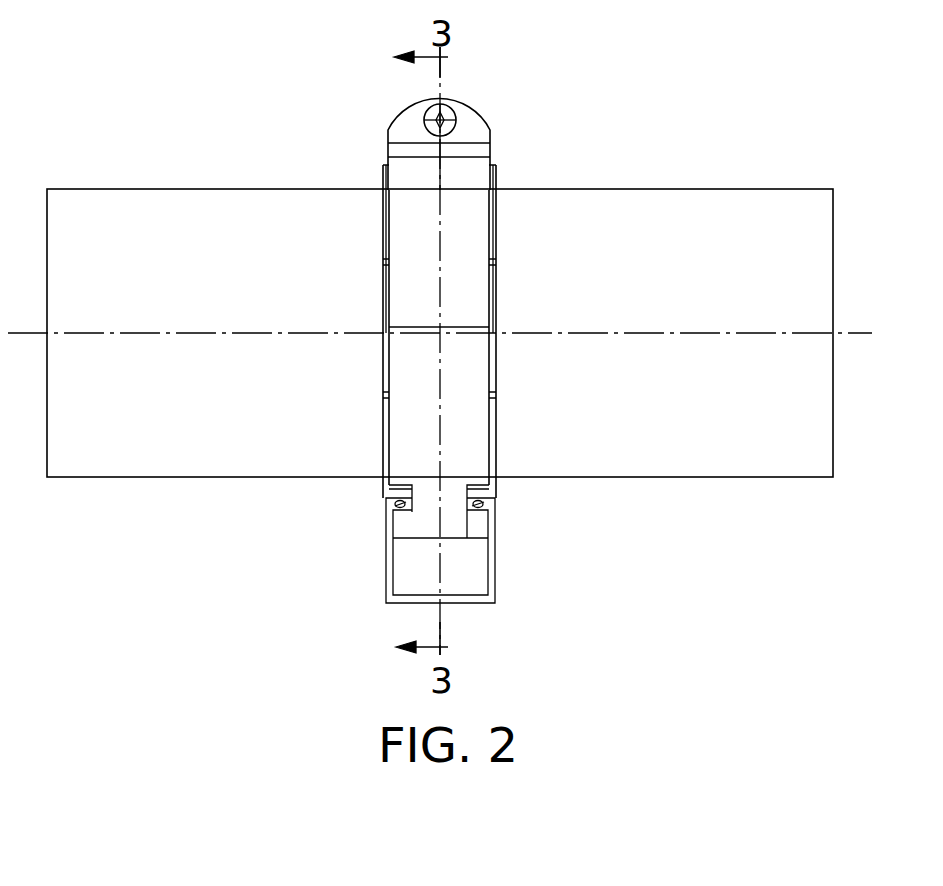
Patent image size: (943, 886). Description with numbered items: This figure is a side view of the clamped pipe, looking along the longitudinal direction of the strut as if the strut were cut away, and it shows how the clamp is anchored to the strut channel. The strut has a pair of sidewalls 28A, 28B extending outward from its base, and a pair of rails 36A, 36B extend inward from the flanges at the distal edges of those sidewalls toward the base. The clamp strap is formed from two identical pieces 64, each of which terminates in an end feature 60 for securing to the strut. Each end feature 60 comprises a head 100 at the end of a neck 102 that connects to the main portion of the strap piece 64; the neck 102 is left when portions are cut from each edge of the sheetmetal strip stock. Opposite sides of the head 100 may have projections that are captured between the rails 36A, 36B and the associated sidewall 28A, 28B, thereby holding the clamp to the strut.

The strap piece 64 is at (470, 371).
The neck 102 is at (452, 496).
The rail 36A is at (476, 504).
The rail 36B is at (395, 507).
The sidewall 28A is at (490, 567).
The sidewall 28B is at (390, 545).
The end feature 60 is at (500, 524).
The head 100 is at (415, 535).